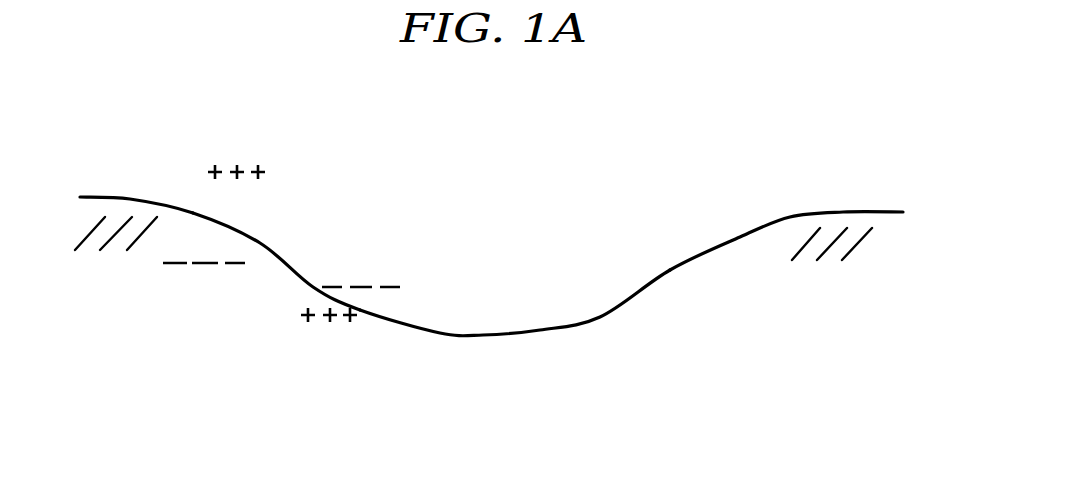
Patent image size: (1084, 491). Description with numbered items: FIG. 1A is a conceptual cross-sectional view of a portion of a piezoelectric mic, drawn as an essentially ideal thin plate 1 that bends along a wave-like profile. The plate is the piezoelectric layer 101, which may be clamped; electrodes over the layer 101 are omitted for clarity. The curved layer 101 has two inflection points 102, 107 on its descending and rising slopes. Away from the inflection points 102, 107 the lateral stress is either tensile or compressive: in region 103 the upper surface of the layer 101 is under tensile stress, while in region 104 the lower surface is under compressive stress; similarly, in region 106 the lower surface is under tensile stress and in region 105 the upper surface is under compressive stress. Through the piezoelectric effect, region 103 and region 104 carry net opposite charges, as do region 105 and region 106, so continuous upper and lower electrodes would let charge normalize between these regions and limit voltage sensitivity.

The substrate 1 is at (616, 282).
The piezoelectric layer 101 is at (132, 168).
The inflection point 102 is at (266, 301).
The region 103 is at (239, 145).
The region 104 is at (169, 284).
The region 105 is at (331, 267).
The region 106 is at (328, 347).
The inflection point 107 is at (661, 259).